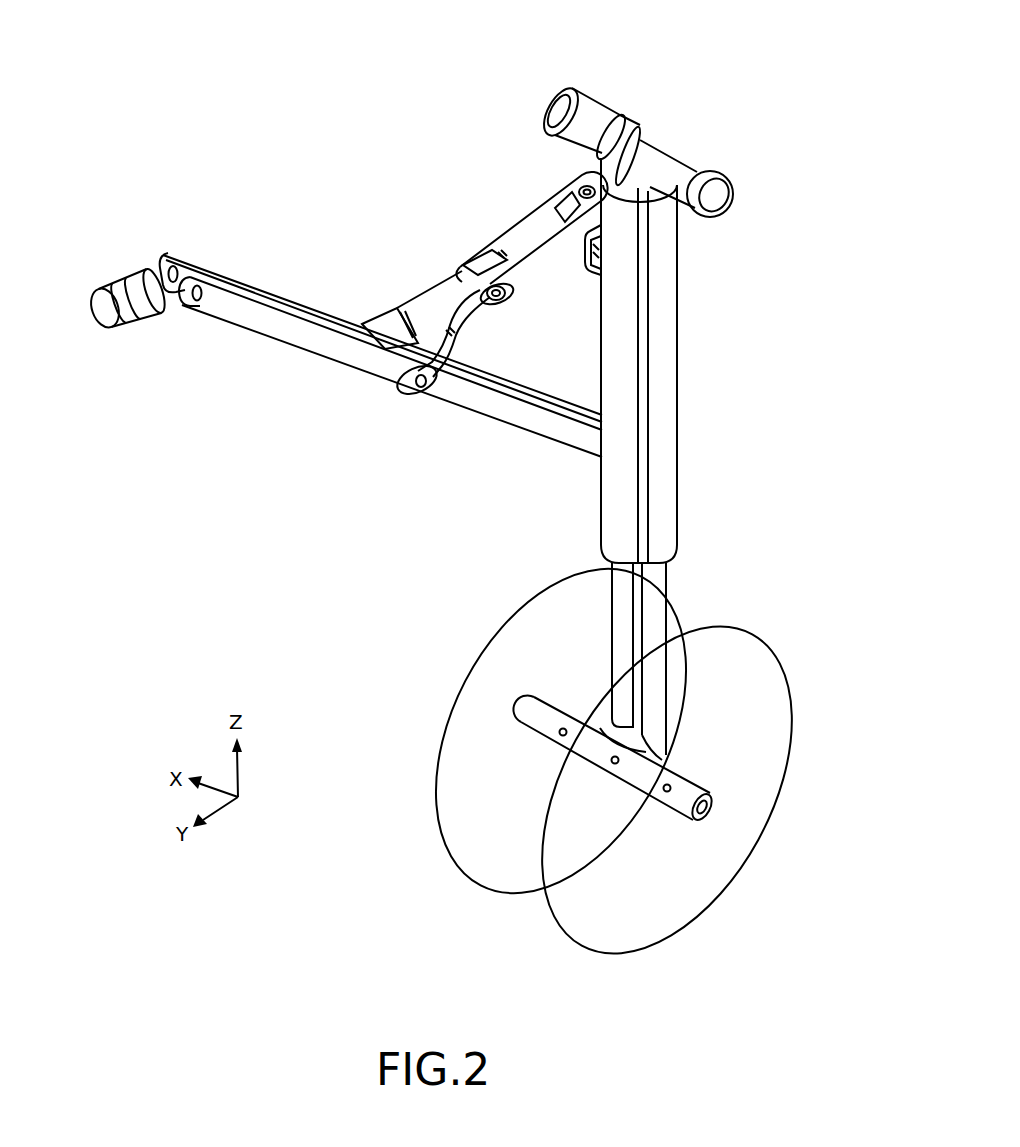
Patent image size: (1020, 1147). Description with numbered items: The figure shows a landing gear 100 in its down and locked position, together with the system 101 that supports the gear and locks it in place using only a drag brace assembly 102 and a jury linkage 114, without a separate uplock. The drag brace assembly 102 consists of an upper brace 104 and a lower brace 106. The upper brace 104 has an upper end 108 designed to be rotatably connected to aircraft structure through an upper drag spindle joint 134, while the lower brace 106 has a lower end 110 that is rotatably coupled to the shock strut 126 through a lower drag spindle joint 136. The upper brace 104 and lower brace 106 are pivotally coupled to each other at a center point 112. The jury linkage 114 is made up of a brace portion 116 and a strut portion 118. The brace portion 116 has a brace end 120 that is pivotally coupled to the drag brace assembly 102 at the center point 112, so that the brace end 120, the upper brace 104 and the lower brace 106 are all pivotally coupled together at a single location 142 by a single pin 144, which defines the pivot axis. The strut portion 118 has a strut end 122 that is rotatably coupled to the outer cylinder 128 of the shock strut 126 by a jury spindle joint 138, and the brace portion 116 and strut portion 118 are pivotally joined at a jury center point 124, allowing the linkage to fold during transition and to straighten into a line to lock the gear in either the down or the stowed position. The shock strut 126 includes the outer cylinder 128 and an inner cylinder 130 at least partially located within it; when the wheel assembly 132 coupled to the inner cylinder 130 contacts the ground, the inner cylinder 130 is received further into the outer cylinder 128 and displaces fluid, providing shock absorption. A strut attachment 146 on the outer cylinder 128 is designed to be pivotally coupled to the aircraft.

The landing gear 100 is at (753, 80).
The system 101 is at (783, 203).
The drag brace assembly 102 is at (330, 363).
The upper brace 104 is at (245, 333).
The lower brace 106 is at (540, 437).
The upper end 108 is at (163, 255).
The lower end 110 is at (600, 410).
The center point 112 is at (400, 388).
The jury linkage 114 is at (514, 230).
The brace portion 116 is at (424, 303).
The strut portion 118 is at (540, 232).
The brace end 120 is at (432, 305).
The strut end 122 is at (580, 176).
The jury center point 124 is at (513, 287).
The shock strut 126 is at (679, 292).
The outer cylinder 128 is at (677, 240).
The inner cylinder 130 is at (676, 592).
The wheel assembly 132 is at (790, 687).
The upper drag spindle joint 134 is at (103, 290).
The lower drag spindle joint 136 is at (626, 440).
The jury spindle joint 138 is at (600, 228).
The single location 142 is at (428, 390).
The single pin 144 is at (418, 392).
The strut attachment 146 is at (680, 150).